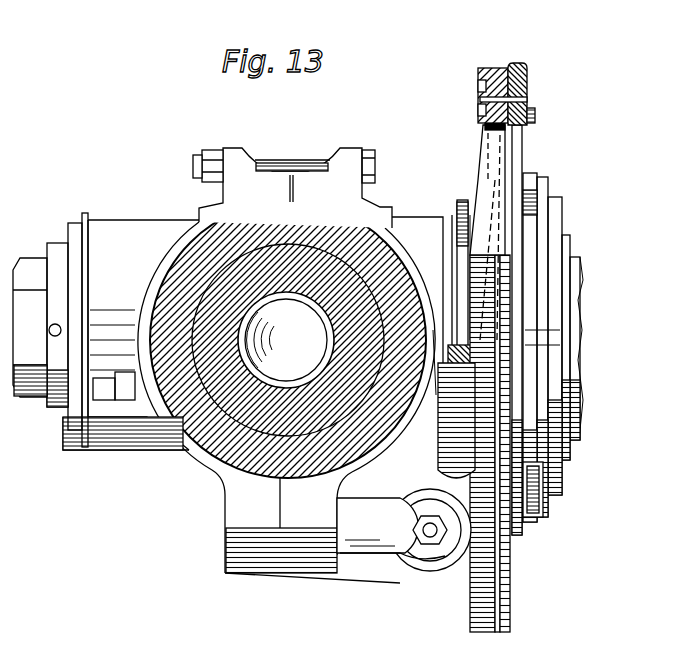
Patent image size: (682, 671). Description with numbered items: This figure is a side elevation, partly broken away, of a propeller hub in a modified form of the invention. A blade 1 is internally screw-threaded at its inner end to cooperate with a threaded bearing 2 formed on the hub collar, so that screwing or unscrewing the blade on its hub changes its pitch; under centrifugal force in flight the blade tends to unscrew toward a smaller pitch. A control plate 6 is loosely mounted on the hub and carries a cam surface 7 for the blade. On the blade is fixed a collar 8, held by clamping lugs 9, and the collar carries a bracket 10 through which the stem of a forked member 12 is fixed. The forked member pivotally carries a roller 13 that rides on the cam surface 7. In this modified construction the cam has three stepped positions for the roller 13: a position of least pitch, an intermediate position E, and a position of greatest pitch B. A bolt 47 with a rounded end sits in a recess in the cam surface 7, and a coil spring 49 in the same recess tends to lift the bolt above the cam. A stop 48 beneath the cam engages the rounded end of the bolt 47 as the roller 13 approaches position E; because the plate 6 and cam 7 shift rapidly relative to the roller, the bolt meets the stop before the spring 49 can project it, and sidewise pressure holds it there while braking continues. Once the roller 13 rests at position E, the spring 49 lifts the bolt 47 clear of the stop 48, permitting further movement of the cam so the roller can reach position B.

The blade 1 is at (383, 235).
The threaded bearing 2 is at (248, 258).
The control plate 6 is at (527, 80).
The cam surface 7 is at (478, 163).
The collar 8 is at (398, 217).
The clamping lugs 9 is at (353, 163).
The bracket 10 is at (278, 573).
The forked member 12 is at (392, 543).
The roller 13 is at (437, 583).
The bolt 47 is at (483, 99).
The stop 48 is at (535, 117).
The coil spring 49 is at (492, 77).
The intermediate position E is at (486, 142).
The position of greatest pitch B is at (497, 190).